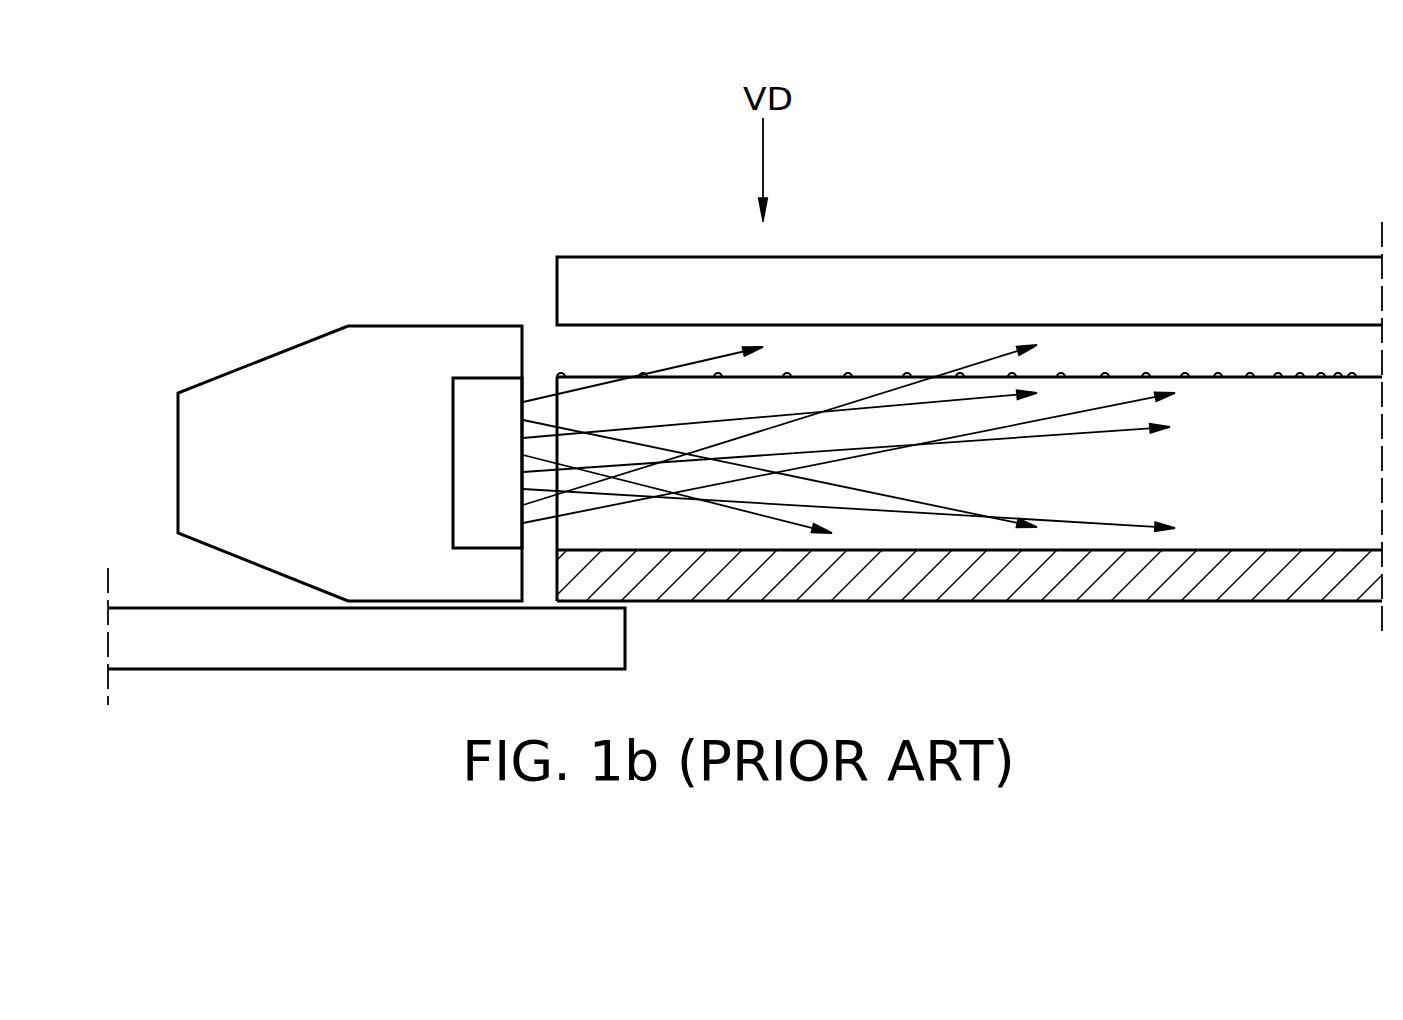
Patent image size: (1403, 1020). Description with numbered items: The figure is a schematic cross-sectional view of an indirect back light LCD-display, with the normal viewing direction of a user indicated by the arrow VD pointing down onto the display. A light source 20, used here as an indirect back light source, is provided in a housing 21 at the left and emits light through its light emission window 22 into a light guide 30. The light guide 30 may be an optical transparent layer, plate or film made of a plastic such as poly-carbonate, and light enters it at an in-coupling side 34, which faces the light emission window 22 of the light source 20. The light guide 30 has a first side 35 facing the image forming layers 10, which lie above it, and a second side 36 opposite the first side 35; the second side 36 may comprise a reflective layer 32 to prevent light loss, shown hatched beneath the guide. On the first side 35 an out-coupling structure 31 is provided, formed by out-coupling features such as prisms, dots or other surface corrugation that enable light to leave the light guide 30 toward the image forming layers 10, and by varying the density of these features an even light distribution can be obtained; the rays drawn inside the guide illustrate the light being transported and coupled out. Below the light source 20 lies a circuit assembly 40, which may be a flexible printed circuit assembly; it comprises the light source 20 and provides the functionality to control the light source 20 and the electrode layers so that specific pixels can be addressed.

The image forming layers 10 is at (1175, 295).
The light source 20 is at (208, 318).
The housing 21 is at (401, 360).
The light emission window 22 is at (519, 460).
The light guide 30 is at (969, 389).
The out-coupling structure 31 is at (1058, 375).
The reflective layer 32 is at (865, 585).
The in-coupling side 34 is at (569, 392).
The first side 35 is at (817, 376).
The second side 36 is at (1277, 552).
The circuit assembly 40 is at (367, 655).